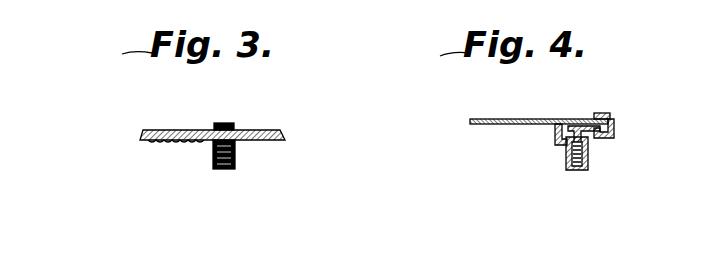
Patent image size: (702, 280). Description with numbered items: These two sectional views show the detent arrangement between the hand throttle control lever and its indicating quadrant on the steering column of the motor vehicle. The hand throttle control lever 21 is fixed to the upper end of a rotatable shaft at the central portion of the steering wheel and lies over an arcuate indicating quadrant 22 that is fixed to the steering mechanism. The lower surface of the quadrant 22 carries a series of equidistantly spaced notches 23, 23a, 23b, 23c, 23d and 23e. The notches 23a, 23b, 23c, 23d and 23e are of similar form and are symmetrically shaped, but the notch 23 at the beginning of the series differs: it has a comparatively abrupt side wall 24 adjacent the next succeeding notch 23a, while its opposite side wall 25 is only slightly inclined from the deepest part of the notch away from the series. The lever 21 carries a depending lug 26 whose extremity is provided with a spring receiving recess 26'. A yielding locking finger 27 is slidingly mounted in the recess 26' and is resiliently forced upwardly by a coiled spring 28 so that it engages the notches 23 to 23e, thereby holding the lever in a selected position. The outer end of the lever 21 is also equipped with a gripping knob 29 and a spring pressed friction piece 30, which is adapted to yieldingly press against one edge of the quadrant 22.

In FIG. 4, the hand throttle control lever 21 is at (525, 120).
In FIG. 3, the arcuate indicating quadrant 22 is at (272, 130).
In FIG. 4, the arcuate indicating quadrant 22 is at (576, 125).
In FIG. 3, the notch 23 is at (242, 130).
In FIG. 3, the notch 23a is at (205, 130).
In FIG. 3, the notch 23b is at (188, 130).
In FIG. 3, the notch 23c is at (181, 143).
In FIG. 3, the notch 23d is at (165, 143).
In FIG. 3, the notch 23e is at (148, 142).
In FIG. 3, the abrupt side wall 24 is at (232, 143).
In FIG. 3, the inclined side wall 25 is at (250, 130).
In FIG. 4, the depending lug 26 is at (529, 156).
In FIG. 4, the spring receiving recess 26' is at (620, 153).
In FIG. 4, the yielding locking finger 27 is at (587, 150).
In FIG. 4, the coiled spring 28 is at (574, 170).
In FIG. 4, the gripping knob 29 is at (612, 108).
In FIG. 4, the spring pressed friction piece 30 is at (588, 120).